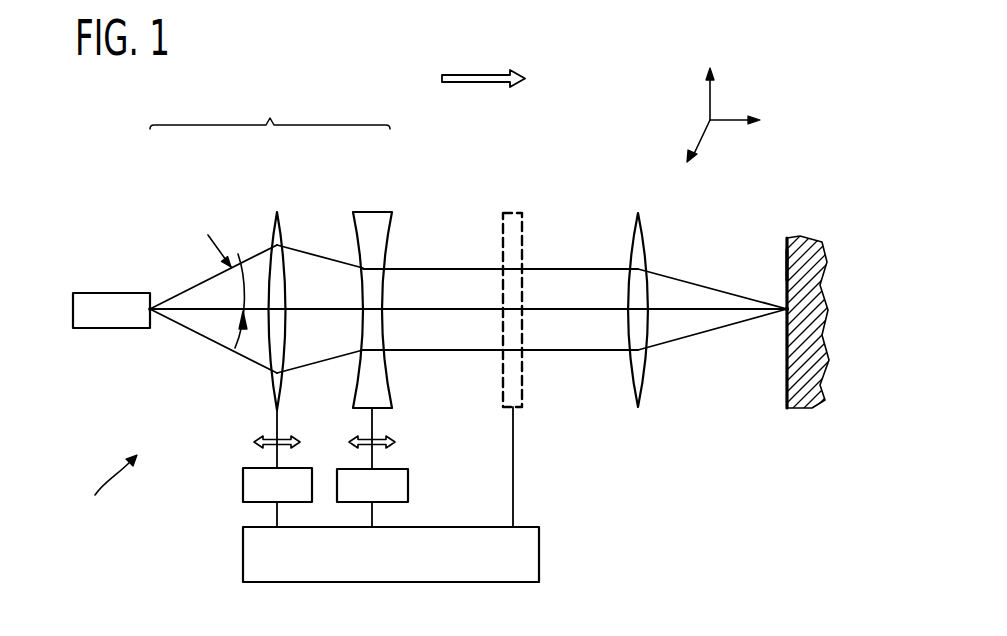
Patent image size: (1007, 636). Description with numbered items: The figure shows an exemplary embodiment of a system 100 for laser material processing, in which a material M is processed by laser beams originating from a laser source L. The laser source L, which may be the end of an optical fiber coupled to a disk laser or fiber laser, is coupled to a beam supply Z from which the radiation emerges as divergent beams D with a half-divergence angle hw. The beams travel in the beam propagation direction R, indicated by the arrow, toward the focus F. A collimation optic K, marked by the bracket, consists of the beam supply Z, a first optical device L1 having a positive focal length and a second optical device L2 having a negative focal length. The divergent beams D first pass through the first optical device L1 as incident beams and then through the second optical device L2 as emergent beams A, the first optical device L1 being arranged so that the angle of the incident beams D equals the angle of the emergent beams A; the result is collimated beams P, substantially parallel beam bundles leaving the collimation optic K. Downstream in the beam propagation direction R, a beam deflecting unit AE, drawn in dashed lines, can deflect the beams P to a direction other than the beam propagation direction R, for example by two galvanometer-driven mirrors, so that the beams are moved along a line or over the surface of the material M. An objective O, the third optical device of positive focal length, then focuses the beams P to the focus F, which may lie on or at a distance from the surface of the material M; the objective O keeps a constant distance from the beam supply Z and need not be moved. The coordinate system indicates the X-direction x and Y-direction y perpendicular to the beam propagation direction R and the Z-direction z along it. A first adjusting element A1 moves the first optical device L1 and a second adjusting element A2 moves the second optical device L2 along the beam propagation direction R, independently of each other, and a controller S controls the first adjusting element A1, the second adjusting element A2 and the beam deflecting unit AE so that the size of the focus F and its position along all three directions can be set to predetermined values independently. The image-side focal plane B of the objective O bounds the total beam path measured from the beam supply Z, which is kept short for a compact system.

The system for laser material processing 100 is at (106, 495).
The laser source L is at (101, 293).
The beam supply Z is at (151, 300).
The divergent beams D is at (212, 277).
The half-divergence angle hw is at (242, 268).
The collimation optic K is at (270, 106).
The first optical device L1 is at (277, 212).
The second optical device L2 is at (372, 212).
The emergent beams A is at (326, 258).
The collimated beams P is at (442, 269).
The beam propagation direction R is at (478, 83).
The beam deflecting unit AE is at (513, 213).
The objective O is at (638, 213).
The X-direction x is at (709, 78).
The Y-direction y is at (689, 156).
The Z-direction z is at (745, 118).
The image-side focal plane B is at (786, 263).
The focus F is at (785, 312).
The material M is at (800, 382).
The first adjusting element A1 is at (243, 485).
The second adjusting element A2 is at (408, 485).
The controller S is at (539, 553).